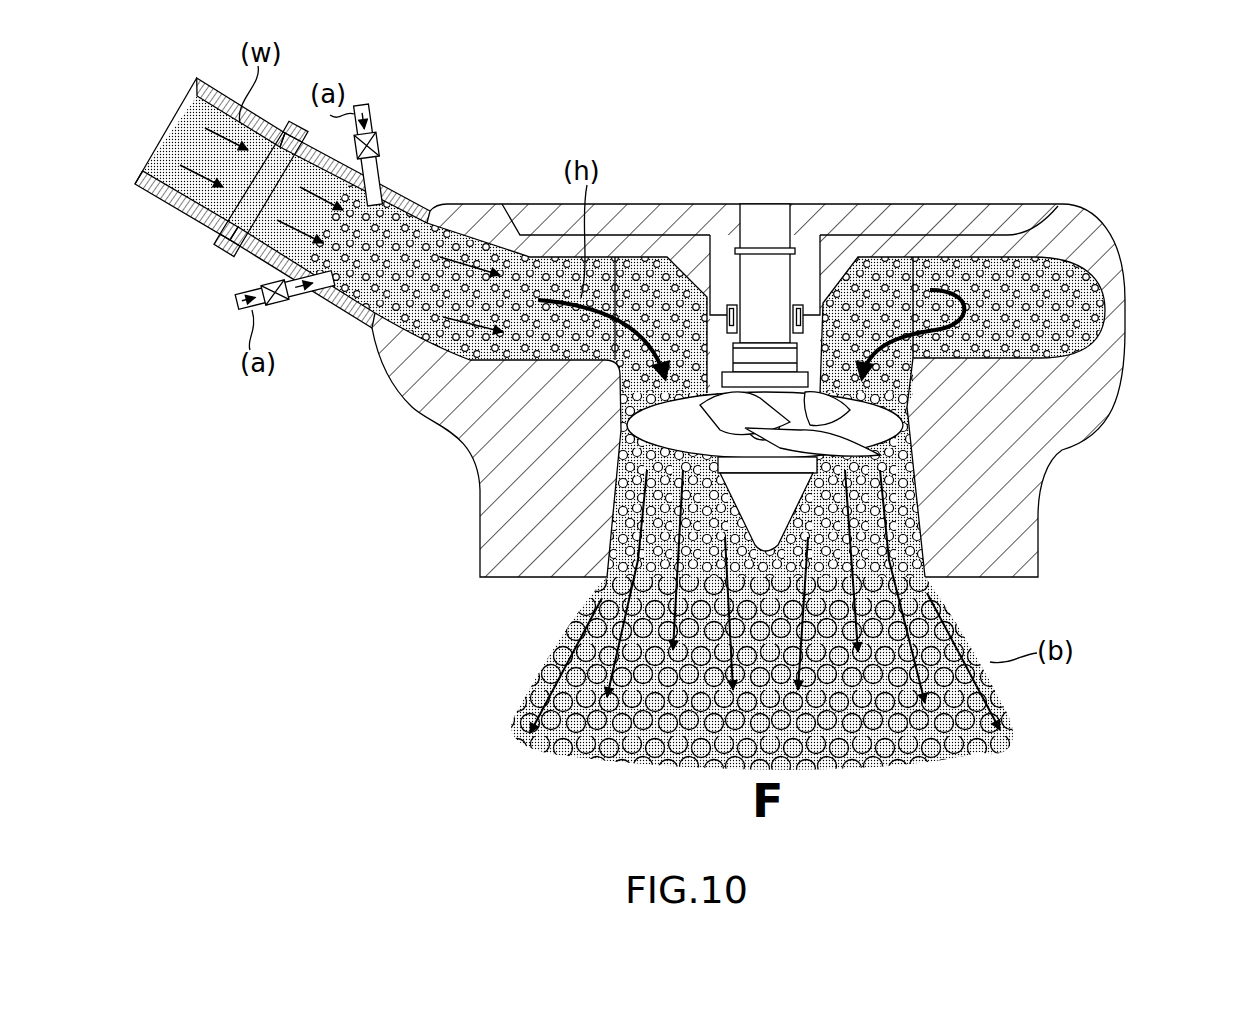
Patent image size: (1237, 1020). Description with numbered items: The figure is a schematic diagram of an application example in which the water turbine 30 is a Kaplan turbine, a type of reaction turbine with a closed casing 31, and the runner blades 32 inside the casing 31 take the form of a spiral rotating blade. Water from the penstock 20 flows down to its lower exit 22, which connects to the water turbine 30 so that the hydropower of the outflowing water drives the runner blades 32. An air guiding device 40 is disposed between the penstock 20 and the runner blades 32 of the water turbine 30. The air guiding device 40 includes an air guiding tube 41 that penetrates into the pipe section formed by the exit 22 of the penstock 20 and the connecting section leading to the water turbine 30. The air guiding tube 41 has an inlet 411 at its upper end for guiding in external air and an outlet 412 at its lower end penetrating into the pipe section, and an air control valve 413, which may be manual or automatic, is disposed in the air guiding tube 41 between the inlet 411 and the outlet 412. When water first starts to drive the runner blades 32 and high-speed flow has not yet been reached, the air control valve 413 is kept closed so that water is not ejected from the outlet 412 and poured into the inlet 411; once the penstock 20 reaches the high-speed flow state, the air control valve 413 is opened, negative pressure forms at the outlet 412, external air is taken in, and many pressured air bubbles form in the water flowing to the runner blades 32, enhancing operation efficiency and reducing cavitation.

The penstock 20 is at (183, 206).
The exit 22 is at (343, 305).
The water turbine 30 is at (962, 186).
The casing 31 is at (1090, 235).
The runner blades 32 is at (863, 420).
The air guiding device 40 is at (436, 132).
The air guiding tube 41 is at (381, 122).
The inlet 411 is at (366, 105).
The outlet 412 is at (411, 179).
The air control valve 413 is at (381, 148).